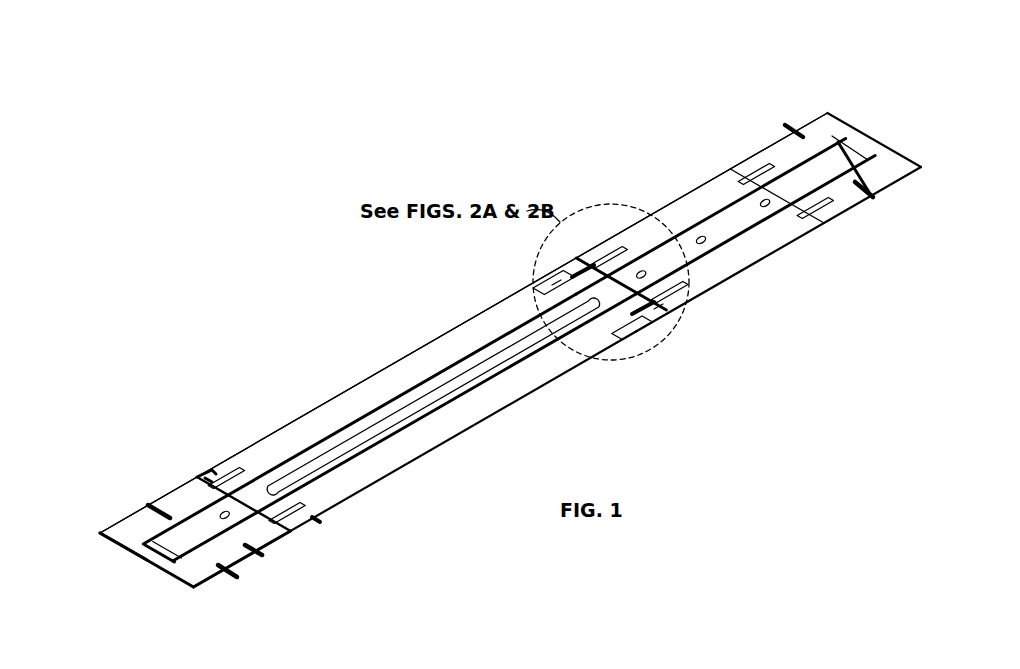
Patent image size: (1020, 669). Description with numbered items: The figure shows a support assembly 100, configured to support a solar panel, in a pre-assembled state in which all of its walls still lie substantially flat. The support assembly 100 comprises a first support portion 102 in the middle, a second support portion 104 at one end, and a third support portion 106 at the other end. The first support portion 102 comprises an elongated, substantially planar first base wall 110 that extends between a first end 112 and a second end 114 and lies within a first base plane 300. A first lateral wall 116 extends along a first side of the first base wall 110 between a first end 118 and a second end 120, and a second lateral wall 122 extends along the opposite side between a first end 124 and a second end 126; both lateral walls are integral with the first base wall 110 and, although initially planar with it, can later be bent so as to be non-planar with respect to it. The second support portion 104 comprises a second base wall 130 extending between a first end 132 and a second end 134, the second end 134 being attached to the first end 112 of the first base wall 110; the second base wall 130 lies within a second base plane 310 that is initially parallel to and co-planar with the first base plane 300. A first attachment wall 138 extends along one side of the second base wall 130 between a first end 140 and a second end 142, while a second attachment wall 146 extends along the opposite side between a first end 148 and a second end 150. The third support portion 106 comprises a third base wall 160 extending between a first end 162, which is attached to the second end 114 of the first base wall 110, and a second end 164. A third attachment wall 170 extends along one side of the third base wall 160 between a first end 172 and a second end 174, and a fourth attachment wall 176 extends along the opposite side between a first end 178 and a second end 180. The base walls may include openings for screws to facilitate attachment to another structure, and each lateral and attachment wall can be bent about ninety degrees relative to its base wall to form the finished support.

The support assembly 100 is at (306, 117).
The first support portion 102 is at (311, 268).
The second support portion 104 is at (646, 111).
The third support portion 106 is at (116, 464).
The first base wall 110 is at (460, 361).
The first end 112 is at (620, 326).
The second end 114 is at (248, 470).
The first lateral wall 116 is at (406, 362).
The first end 118 is at (566, 256).
The second end 120 is at (200, 474).
The second lateral wall 122 is at (473, 418).
The first end 124 is at (660, 318).
The second end 126 is at (318, 524).
The second base wall 130 is at (730, 206).
The first end 132 is at (868, 142).
The second end 134 is at (628, 254).
The first attachment wall 138 is at (690, 196).
The first end 140 is at (833, 121).
The second end 142 is at (590, 254).
The second attachment wall 146 is at (778, 243).
The first end 148 is at (905, 161).
The second end 150 is at (685, 300).
The third base wall 160 is at (195, 530).
The first end 162 is at (255, 552).
The second end 164 is at (150, 558).
The third attachment wall 170 is at (140, 516).
The first end 172 is at (190, 486).
The second end 174 is at (117, 543).
The fourth attachment wall 176 is at (220, 570).
The first end 178 is at (285, 534).
The second end 180 is at (172, 568).
The first base plane 300 is at (360, 422).
The second base plane 310 is at (802, 176).